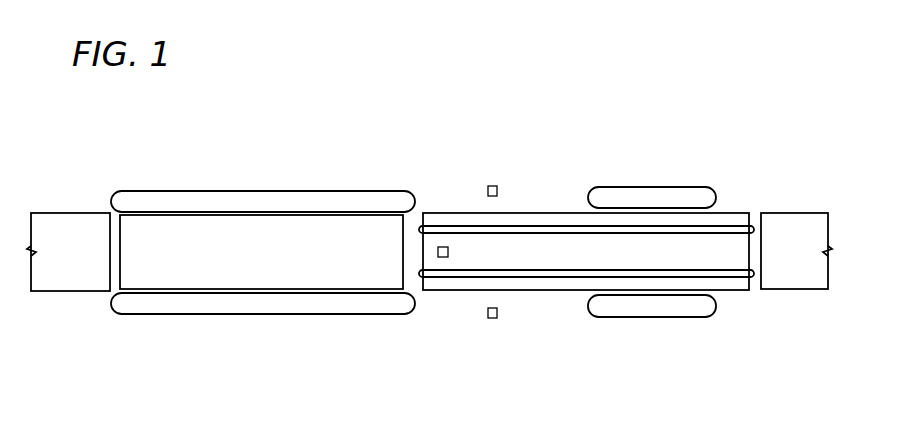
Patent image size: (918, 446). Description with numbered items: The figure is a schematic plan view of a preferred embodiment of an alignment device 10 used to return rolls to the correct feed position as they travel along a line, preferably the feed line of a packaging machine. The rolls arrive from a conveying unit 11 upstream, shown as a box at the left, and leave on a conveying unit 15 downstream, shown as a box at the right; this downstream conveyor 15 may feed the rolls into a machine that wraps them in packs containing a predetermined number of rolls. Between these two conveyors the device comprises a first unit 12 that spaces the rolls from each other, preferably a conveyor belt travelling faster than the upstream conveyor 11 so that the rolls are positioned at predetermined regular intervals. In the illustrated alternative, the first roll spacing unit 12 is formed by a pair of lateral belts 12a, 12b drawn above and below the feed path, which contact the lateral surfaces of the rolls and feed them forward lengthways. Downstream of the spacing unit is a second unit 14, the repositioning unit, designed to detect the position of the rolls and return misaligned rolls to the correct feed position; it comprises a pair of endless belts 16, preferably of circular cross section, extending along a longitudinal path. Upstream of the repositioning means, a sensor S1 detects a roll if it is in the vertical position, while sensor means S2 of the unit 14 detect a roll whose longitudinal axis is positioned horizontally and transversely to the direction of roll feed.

The alignment device 10 is at (368, 139).
The upstream conveying unit 11 is at (65, 240).
The first unit 12 is at (263, 264).
The lateral belt 12a is at (180, 197).
The lateral belt 12b is at (191, 324).
The second unit 14 is at (589, 256).
The downstream conveying unit 15 is at (797, 268).
The endless belts 16 is at (718, 228).
The sensor S1 is at (443, 246).
The sensor means S2 is at (493, 185).